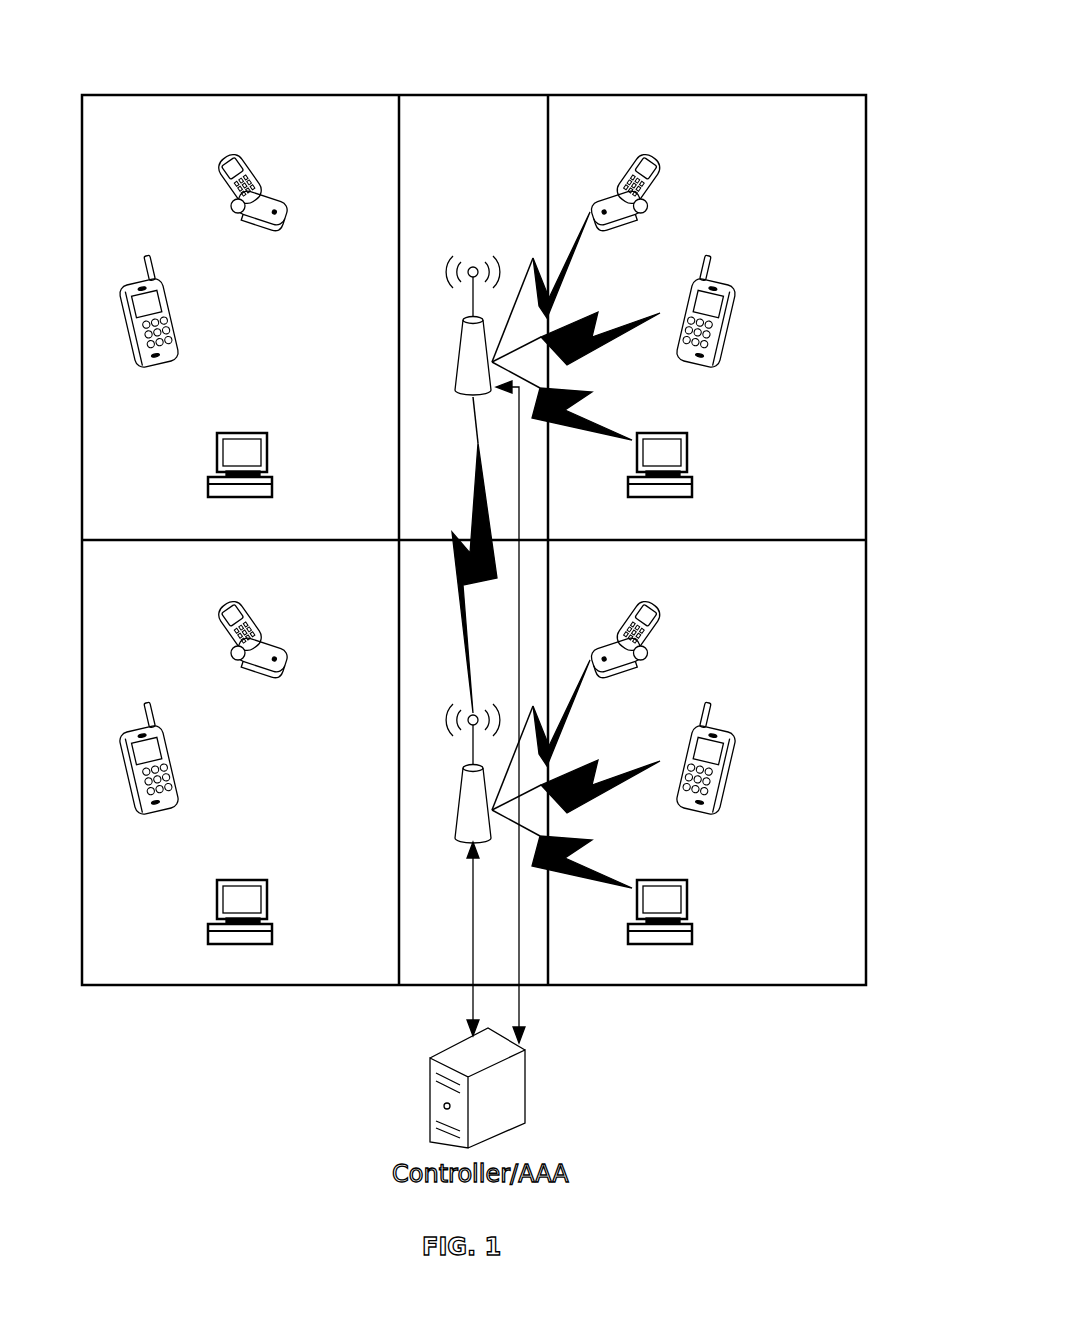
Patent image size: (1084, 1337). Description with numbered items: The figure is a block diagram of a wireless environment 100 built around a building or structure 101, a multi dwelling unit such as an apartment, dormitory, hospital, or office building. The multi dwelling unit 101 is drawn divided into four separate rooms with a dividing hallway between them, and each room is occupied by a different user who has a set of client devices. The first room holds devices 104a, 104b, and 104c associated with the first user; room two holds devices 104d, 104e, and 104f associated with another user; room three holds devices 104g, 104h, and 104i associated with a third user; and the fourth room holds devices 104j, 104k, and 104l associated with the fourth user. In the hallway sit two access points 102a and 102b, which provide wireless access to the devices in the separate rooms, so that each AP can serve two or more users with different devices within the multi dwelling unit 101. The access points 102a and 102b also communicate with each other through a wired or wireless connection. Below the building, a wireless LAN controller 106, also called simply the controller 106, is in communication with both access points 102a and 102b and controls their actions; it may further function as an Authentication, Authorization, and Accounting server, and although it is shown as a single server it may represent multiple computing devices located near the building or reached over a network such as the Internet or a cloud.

The wireless environment 100 is at (851, 0).
The building or structure 101 is at (638, 82).
The access point 102a is at (455, 358).
The access point 102b is at (455, 806).
The client device 104a is at (662, 157).
The client device 104b is at (730, 317).
The client device 104c is at (689, 453).
The client device 104d is at (662, 604).
The client device 104e is at (730, 764).
The client device 104f is at (689, 900).
The client device 104g is at (268, 902).
The client device 104h is at (177, 749).
The client device 104i is at (257, 619).
The client device 104j is at (268, 456).
The client device 104k is at (177, 302).
The client device 104l is at (257, 172).
The wireless LAN controller 106 is at (527, 1068).